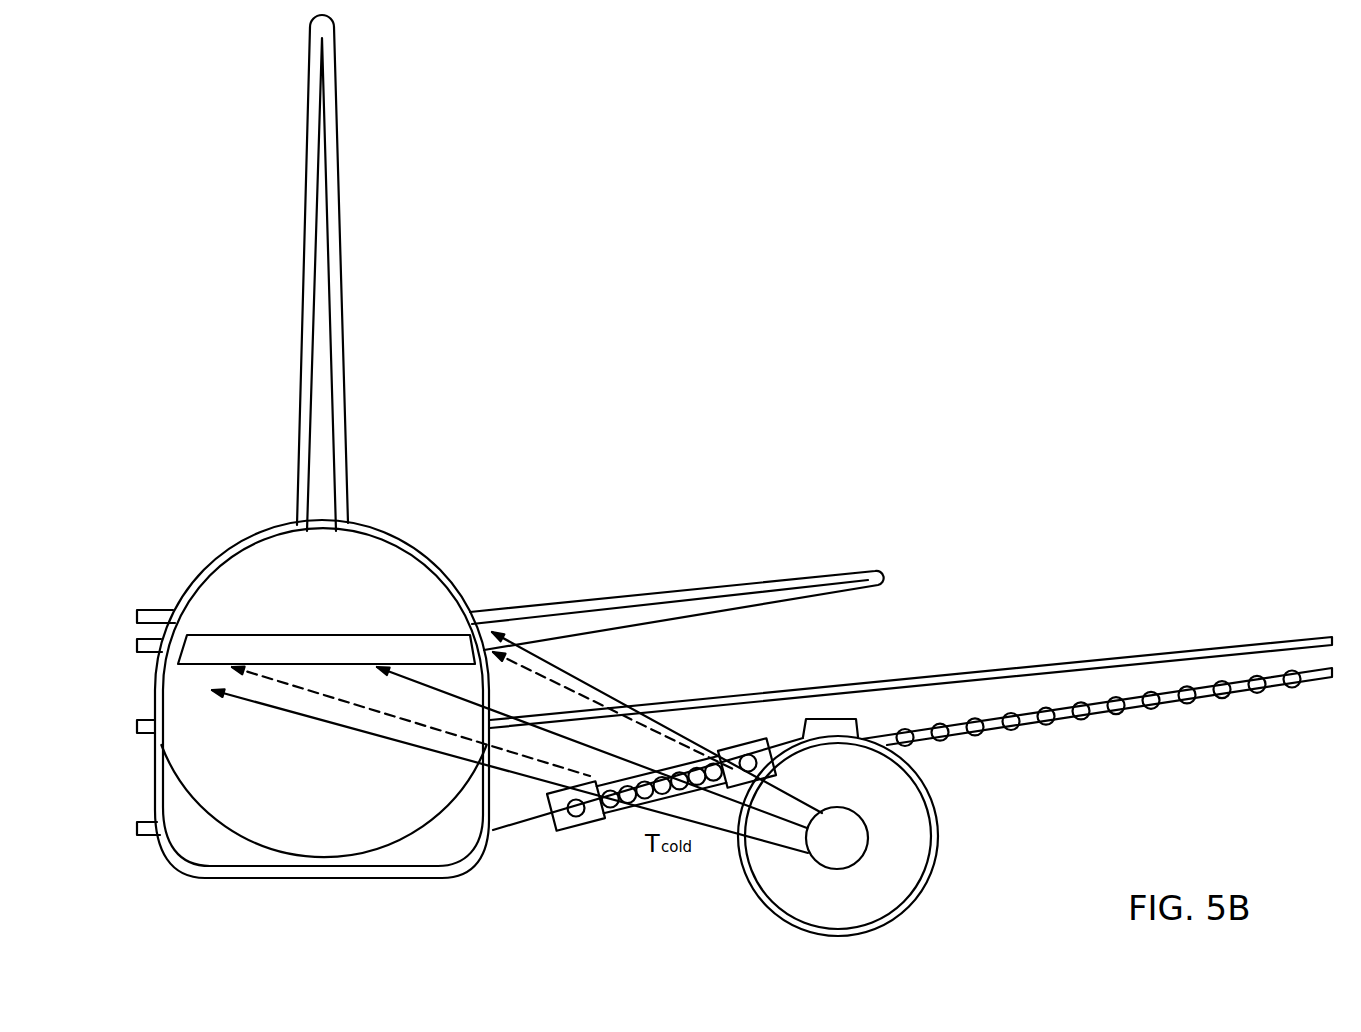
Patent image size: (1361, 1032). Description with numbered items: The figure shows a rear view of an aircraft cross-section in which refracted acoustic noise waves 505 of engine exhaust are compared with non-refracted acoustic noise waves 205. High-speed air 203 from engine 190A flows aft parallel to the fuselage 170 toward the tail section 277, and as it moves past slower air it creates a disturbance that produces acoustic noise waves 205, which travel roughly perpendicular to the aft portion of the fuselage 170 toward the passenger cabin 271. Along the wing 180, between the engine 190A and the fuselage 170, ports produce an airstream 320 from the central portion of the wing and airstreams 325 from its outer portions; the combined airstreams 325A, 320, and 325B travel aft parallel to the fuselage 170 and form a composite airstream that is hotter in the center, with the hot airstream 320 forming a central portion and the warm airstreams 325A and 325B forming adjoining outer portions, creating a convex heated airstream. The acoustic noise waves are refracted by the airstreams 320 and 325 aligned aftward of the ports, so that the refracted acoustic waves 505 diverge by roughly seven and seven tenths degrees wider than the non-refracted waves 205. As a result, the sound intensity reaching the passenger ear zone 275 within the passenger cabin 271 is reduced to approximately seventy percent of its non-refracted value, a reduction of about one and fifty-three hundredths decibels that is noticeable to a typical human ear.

The fuselage 170 is at (405, 543).
The passenger cabin 271 is at (263, 546).
The passenger ear zone 275 is at (318, 635).
The tail section 277 is at (344, 356).
The wing 180 is at (1183, 651).
The engine 190A is at (921, 892).
The high-speed air 203 is at (853, 838).
The airstream 320 is at (671, 760).
The airstreams 325 is at (1310, 692).
The airstream 325A is at (740, 745).
The airstream 325B is at (585, 820).
The refracted acoustic noise waves 505 is at (238, 697).
The acoustic noise waves 205 is at (555, 685).